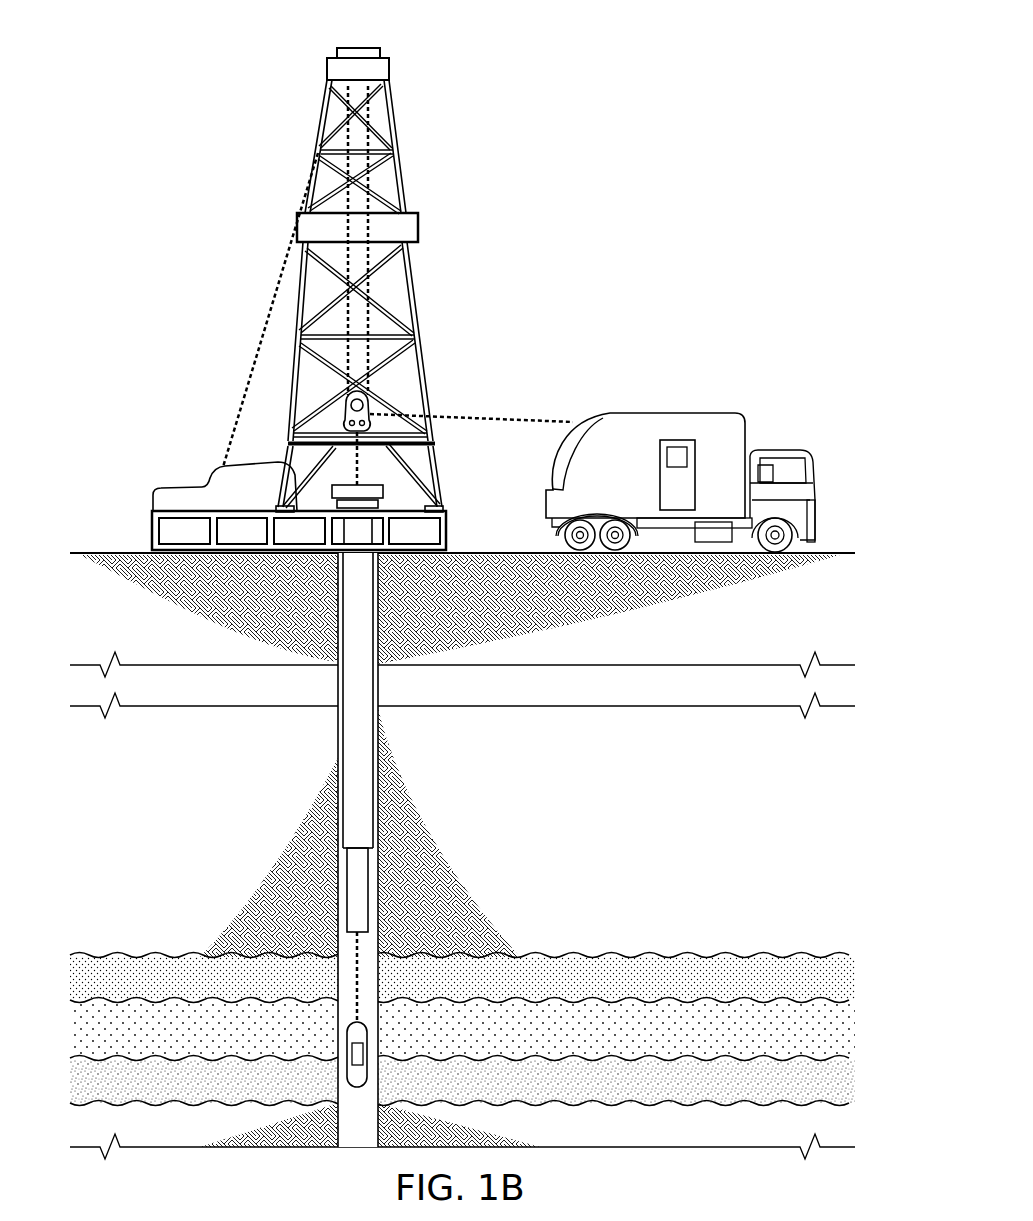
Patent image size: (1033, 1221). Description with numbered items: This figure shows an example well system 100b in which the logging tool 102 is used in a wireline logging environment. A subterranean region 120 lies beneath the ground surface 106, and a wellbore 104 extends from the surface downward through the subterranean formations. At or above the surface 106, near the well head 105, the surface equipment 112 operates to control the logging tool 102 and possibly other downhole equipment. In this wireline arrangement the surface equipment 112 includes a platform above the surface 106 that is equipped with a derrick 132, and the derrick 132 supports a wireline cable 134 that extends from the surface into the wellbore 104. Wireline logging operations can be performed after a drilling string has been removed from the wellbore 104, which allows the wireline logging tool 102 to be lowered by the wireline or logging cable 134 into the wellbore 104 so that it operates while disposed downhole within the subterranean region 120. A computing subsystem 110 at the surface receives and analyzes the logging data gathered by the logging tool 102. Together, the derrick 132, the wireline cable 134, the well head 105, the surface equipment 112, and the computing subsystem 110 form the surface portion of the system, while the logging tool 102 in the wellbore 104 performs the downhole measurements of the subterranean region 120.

The well system 100b is at (210, 86).
The derrick 132 is at (405, 180).
The surface equipment 112 is at (556, 290).
The computing subsystem 110 is at (680, 445).
The wireline cable 134 is at (343, 472).
The well head 105 is at (378, 484).
The ground surface 106 is at (493, 550).
The wellbore 104 is at (336, 722).
The subterranean region 120 is at (556, 812).
The logging tool 102 is at (347, 1047).